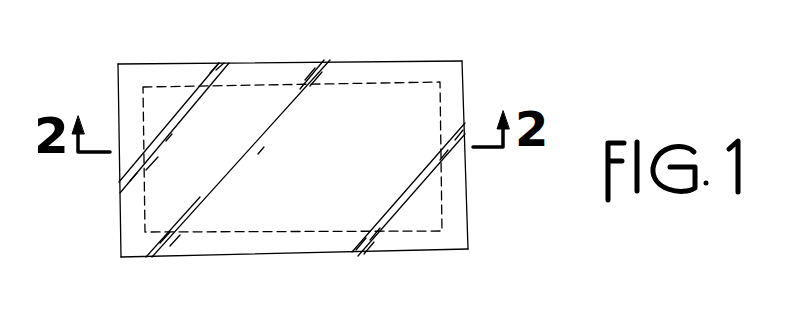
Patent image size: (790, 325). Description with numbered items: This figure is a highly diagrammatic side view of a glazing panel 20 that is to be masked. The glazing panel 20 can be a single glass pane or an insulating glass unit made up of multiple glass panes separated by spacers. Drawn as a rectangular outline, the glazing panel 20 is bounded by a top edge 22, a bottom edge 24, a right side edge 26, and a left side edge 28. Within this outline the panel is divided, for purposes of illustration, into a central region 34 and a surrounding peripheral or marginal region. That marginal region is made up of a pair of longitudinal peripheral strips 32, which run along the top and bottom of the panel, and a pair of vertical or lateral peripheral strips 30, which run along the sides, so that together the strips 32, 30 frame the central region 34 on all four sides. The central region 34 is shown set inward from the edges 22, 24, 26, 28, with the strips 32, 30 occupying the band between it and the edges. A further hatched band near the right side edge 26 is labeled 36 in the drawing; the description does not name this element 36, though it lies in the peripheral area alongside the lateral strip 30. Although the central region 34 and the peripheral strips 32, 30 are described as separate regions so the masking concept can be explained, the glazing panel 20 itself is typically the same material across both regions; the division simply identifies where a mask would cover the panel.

The glazing panel 20 is at (284, 143).
The top edge 22 is at (204, 64).
The bottom edge 24 is at (143, 257).
The right side edge 26 is at (465, 169).
The left side edge 28 is at (120, 184).
The vertical or lateral peripheral strips 30 is at (284, 156).
The longitudinal peripheral strips 32 is at (343, 70).
The central region 34 is at (278, 192).
The conductive trace 36 is at (393, 188).